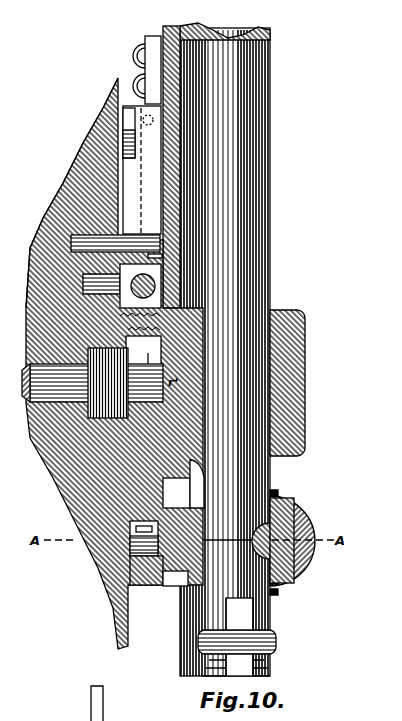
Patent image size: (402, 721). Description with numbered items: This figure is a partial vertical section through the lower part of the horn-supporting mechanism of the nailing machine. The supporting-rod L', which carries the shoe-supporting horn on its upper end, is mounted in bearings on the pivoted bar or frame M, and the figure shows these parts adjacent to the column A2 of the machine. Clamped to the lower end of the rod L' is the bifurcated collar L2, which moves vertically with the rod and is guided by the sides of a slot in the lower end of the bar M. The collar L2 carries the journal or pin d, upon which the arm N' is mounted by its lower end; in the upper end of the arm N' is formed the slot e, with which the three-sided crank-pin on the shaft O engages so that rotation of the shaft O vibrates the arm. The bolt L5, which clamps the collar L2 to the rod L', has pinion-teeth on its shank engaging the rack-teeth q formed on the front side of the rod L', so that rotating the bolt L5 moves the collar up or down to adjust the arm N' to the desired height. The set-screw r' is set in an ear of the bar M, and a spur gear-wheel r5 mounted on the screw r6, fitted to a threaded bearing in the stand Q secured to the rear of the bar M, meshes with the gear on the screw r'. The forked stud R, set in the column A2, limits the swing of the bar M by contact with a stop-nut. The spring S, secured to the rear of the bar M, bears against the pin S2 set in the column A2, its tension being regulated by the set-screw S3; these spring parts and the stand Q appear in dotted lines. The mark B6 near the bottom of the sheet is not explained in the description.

The supporting-rod L' is at (236, 349).
The column A2 is at (25, 489).
The pivoted bar or frame M is at (297, 383).
The spring S is at (142, 170).
The set-screw S3 is at (140, 117).
The pin S2 is at (132, 240).
The stand Q is at (148, 252).
The spur gear-wheel r5 is at (110, 250).
The forked stud R is at (140, 296).
The screw r6 is at (135, 291).
The slot e is at (143, 355).
The set-screw r' is at (148, 363).
The shaft O is at (92, 383).
The journal or pin d is at (128, 530).
The arm N' is at (146, 580).
The bifurcated collar L2 is at (176, 566).
The bolt L5 is at (282, 512).
The rack-teeth q is at (266, 578).
The base B6 is at (80, 700).